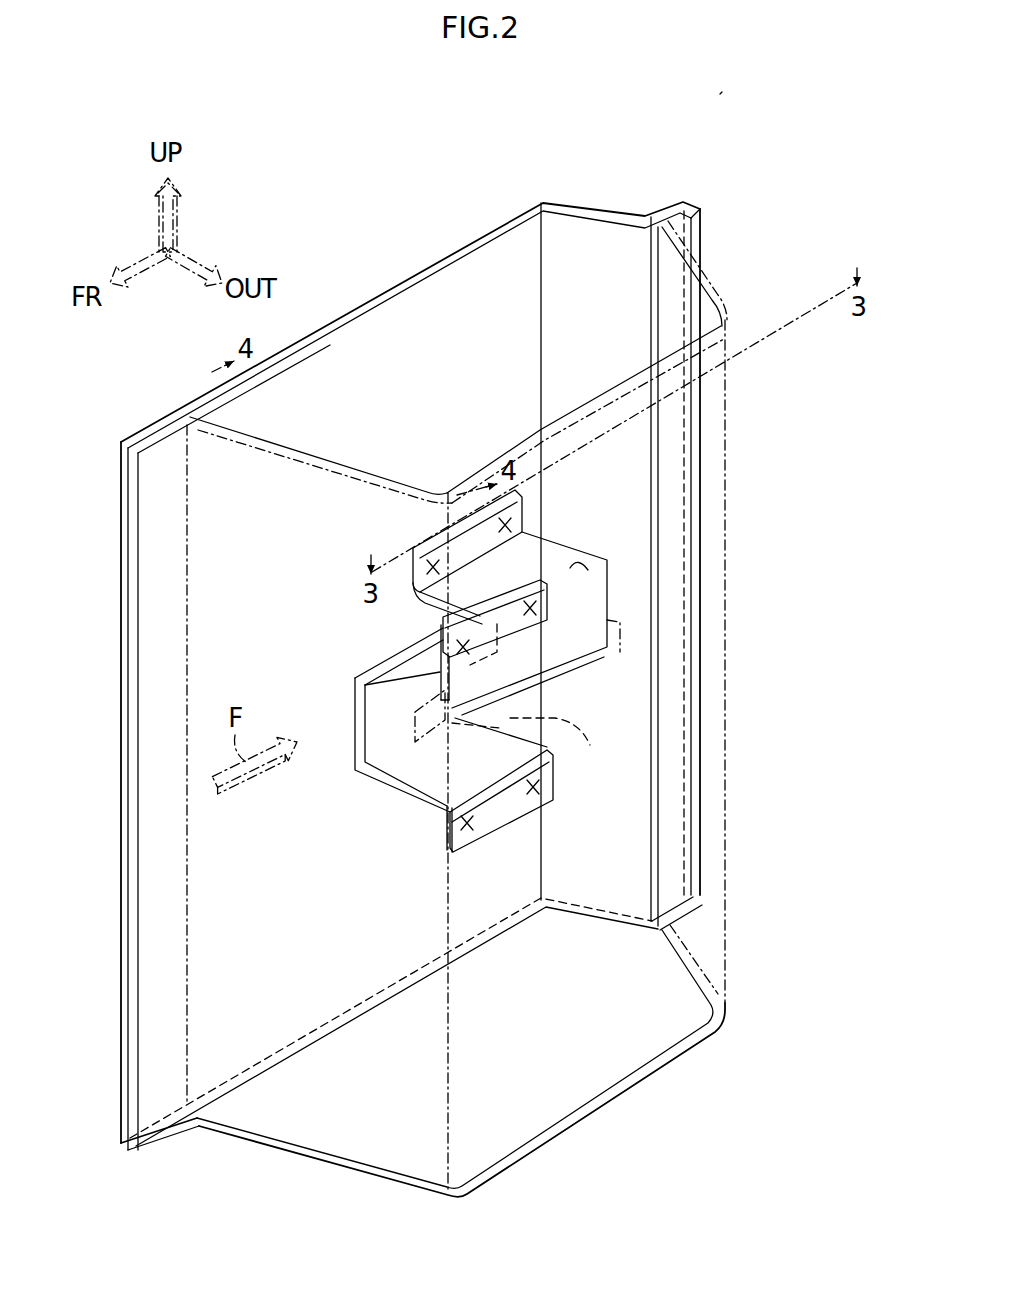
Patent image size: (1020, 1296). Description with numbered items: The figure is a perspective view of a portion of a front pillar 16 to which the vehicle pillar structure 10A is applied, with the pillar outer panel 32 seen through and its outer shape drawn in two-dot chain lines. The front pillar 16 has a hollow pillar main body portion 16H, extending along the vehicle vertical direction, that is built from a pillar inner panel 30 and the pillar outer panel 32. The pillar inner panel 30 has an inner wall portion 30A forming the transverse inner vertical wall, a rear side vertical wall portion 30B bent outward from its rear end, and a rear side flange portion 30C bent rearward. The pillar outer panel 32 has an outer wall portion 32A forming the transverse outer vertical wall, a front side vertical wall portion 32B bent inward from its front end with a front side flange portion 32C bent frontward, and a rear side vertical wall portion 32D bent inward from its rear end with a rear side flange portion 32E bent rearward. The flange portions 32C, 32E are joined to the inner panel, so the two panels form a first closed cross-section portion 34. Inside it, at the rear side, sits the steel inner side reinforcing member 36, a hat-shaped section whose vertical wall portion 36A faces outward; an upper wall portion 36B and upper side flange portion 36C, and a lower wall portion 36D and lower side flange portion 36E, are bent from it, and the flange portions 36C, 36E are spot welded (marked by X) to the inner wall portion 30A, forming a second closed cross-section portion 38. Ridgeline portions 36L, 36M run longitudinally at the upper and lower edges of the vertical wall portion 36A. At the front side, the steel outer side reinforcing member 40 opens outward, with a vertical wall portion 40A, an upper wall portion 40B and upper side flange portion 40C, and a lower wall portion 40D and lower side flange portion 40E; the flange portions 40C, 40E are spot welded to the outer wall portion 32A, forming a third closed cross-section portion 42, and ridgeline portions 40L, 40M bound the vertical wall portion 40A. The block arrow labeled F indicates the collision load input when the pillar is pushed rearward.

The vehicle roof side structure 10A is at (722, 92).
The front pillar 16 is at (368, 170).
The pillar main body portion 16H is at (455, 233).
The pillar inner panel 30 is at (386, 290).
The inner wall portion 30A is at (505, 326).
The rear side vertical wall portion 30B is at (577, 270).
The rear side flange portion 30C is at (678, 204).
The pillar outer panel 32 is at (730, 408).
The outer wall portion 32A is at (585, 458).
The front side vertical wall portion 32B is at (306, 498).
The front side flange portion 32C is at (178, 528).
The rear side vertical wall portion 32D is at (727, 292).
The rear side flange portion 32E is at (704, 224).
The first closed cross-section portion 34 is at (458, 403).
The inner side reinforcing member 36 is at (588, 526).
The vertical wall portion 36A is at (587, 660).
The upper wall portion 36B is at (540, 571).
The upper side flange portion 36C is at (473, 545).
The lower wall portion 36D is at (530, 694).
The lower side flange portion 36E is at (549, 745).
The ridgeline portion 36L is at (582, 566).
The ridgeline portion 36M is at (604, 684).
The second closed cross-section portion 38 is at (500, 665).
The outer side reinforcing member 40 is at (332, 752).
The vertical wall portion 40A is at (392, 728).
The upper wall portion 40B is at (403, 662).
The upper side flange portion 40C is at (510, 610).
The lower wall portion 40D is at (446, 803).
The lower side flange portion 40E is at (494, 826).
The ridgeline portion 40L is at (352, 666).
The ridgeline portion 40M is at (355, 772).
The third closed cross-section portion 42 is at (409, 714).